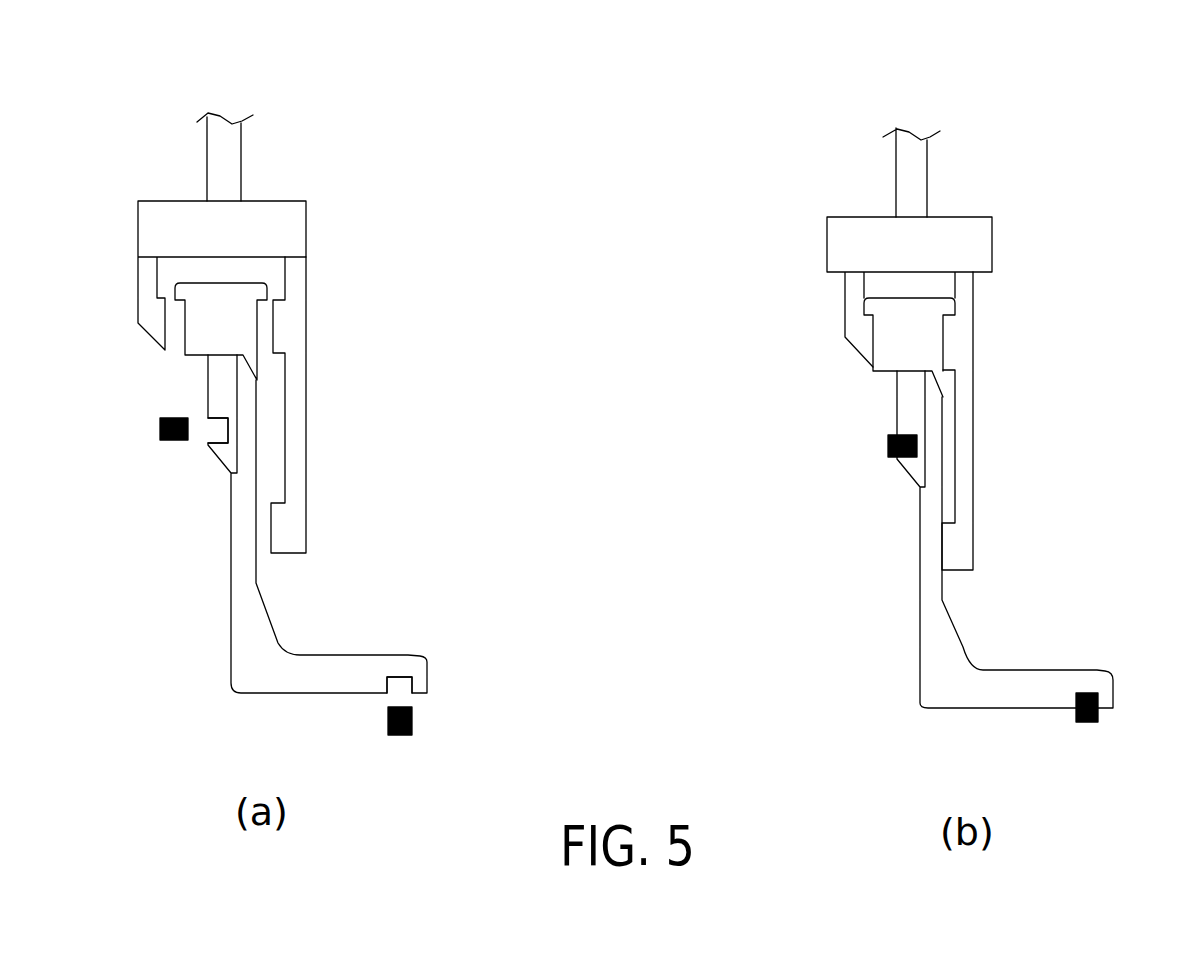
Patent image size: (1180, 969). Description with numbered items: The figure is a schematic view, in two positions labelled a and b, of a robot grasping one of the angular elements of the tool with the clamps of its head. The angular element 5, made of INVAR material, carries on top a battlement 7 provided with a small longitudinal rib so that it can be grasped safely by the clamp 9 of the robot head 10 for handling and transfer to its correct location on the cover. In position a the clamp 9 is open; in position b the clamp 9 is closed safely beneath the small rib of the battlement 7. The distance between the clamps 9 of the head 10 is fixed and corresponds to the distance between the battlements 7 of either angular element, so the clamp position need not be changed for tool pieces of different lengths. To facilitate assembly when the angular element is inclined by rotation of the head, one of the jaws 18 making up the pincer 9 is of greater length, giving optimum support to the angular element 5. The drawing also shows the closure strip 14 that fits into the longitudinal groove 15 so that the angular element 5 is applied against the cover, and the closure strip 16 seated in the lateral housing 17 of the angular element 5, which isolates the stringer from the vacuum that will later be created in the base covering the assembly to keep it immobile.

The angular element 5 is at (237, 542).
The battlement 7 is at (240, 323).
The clamp 9 is at (163, 213).
The head 10 is at (267, 173).
The closure strip 14 is at (413, 723).
The longitudinal groove 15 is at (400, 680).
The closure strip 16 is at (155, 423).
The lateral housing 17 is at (227, 428).
The jaw 18 is at (292, 475).